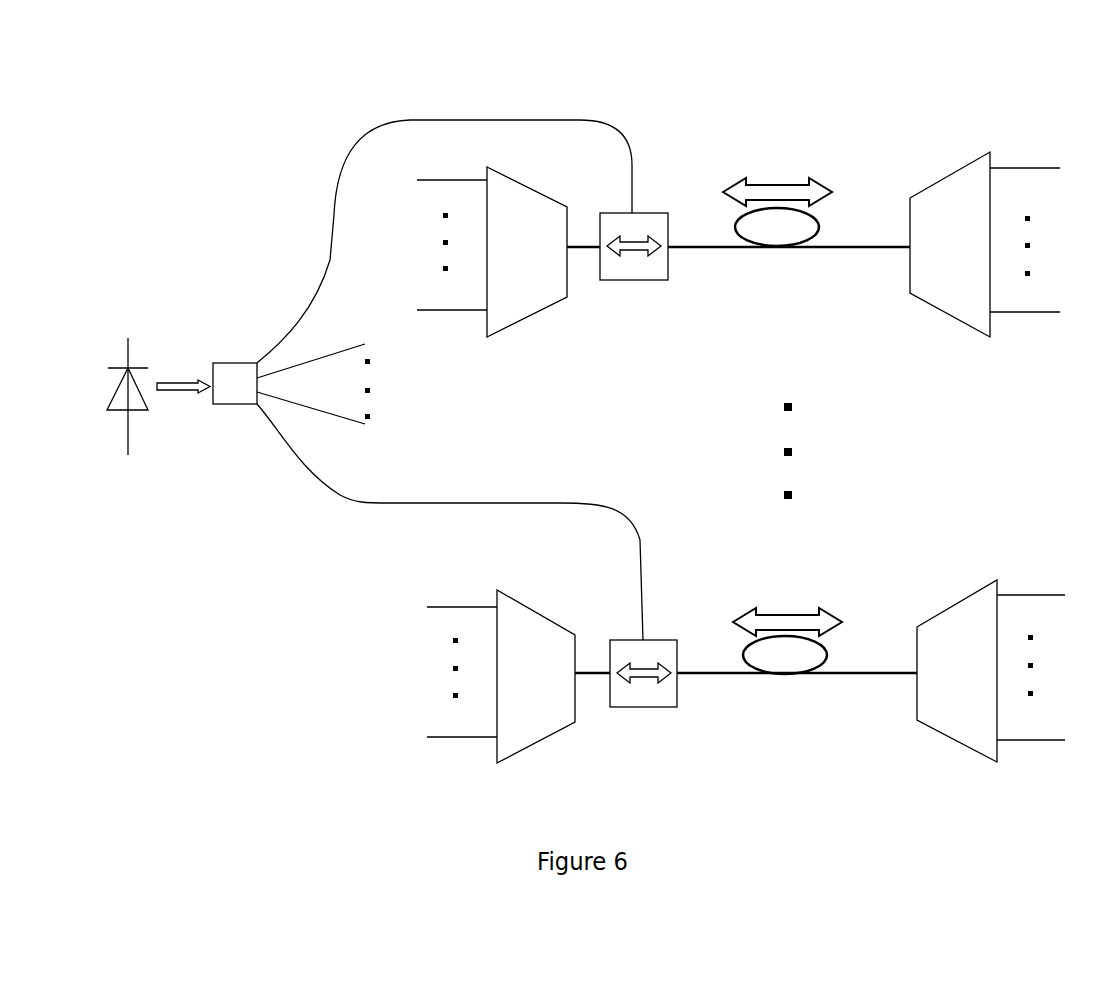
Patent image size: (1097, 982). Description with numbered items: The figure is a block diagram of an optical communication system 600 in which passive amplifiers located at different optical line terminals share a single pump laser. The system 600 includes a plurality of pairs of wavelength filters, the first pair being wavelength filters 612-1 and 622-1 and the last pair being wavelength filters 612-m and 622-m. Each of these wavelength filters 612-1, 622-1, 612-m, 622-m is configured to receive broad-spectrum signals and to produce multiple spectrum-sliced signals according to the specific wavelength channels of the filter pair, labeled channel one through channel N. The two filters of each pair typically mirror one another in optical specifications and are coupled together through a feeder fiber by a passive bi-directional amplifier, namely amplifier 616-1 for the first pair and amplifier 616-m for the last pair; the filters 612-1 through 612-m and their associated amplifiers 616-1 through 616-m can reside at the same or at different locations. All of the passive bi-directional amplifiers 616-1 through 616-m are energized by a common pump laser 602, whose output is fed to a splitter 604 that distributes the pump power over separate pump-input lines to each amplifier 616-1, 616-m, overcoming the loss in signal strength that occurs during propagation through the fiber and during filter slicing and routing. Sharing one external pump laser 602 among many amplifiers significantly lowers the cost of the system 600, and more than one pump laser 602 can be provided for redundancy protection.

The optical communication system 600 is at (850, 85).
The pump laser 602 is at (106, 332).
The splitter 604 is at (233, 389).
The wavelength filter 612-1 is at (492, 245).
The wavelength filter 612-m is at (501, 672).
The passive bi-directional amplifier 616-1 is at (635, 270).
The passive bi-directional amplifier 616-m is at (647, 692).
The wavelength filter 622-1 is at (985, 242).
The wavelength filter 622-m is at (991, 665).